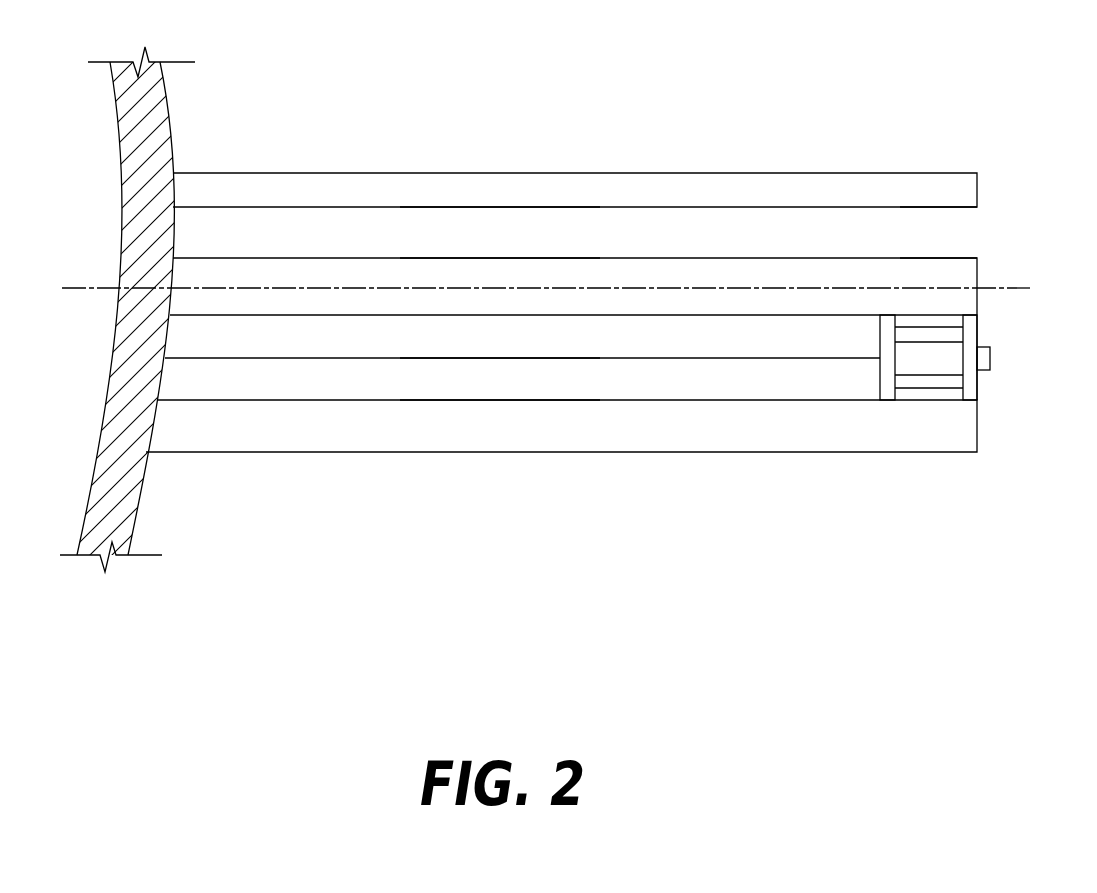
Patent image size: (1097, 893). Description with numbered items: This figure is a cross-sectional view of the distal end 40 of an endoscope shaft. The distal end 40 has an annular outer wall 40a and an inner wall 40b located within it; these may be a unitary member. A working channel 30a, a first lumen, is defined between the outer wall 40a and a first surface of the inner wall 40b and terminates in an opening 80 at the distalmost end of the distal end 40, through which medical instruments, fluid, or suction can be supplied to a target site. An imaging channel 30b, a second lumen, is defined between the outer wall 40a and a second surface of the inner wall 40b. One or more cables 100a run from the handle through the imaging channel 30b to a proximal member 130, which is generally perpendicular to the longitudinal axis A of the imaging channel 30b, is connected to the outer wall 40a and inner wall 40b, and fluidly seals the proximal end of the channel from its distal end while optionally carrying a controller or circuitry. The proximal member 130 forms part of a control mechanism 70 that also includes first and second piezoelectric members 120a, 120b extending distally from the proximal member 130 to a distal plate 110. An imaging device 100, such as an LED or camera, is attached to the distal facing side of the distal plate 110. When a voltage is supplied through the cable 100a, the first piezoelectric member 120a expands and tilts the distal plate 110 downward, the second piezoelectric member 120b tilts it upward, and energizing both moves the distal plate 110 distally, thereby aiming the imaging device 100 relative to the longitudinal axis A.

The distal end 40 is at (600, 272).
The outer wall 40a is at (514, 187).
The inner wall 40b is at (472, 292).
The working channel 30a is at (270, 225).
The imaging channel 30b is at (287, 387).
The cable 100a is at (375, 359).
The opening 80 is at (958, 240).
The longitudinal axis A is at (1017, 287).
The imaging device 100 is at (927, 436).
The distal plate 110 is at (972, 372).
The first piezoelectric member 120a is at (917, 335).
The second piezoelectric member 120b is at (944, 378).
The proximal member 130 is at (884, 378).
The control mechanism 70 is at (1006, 360).